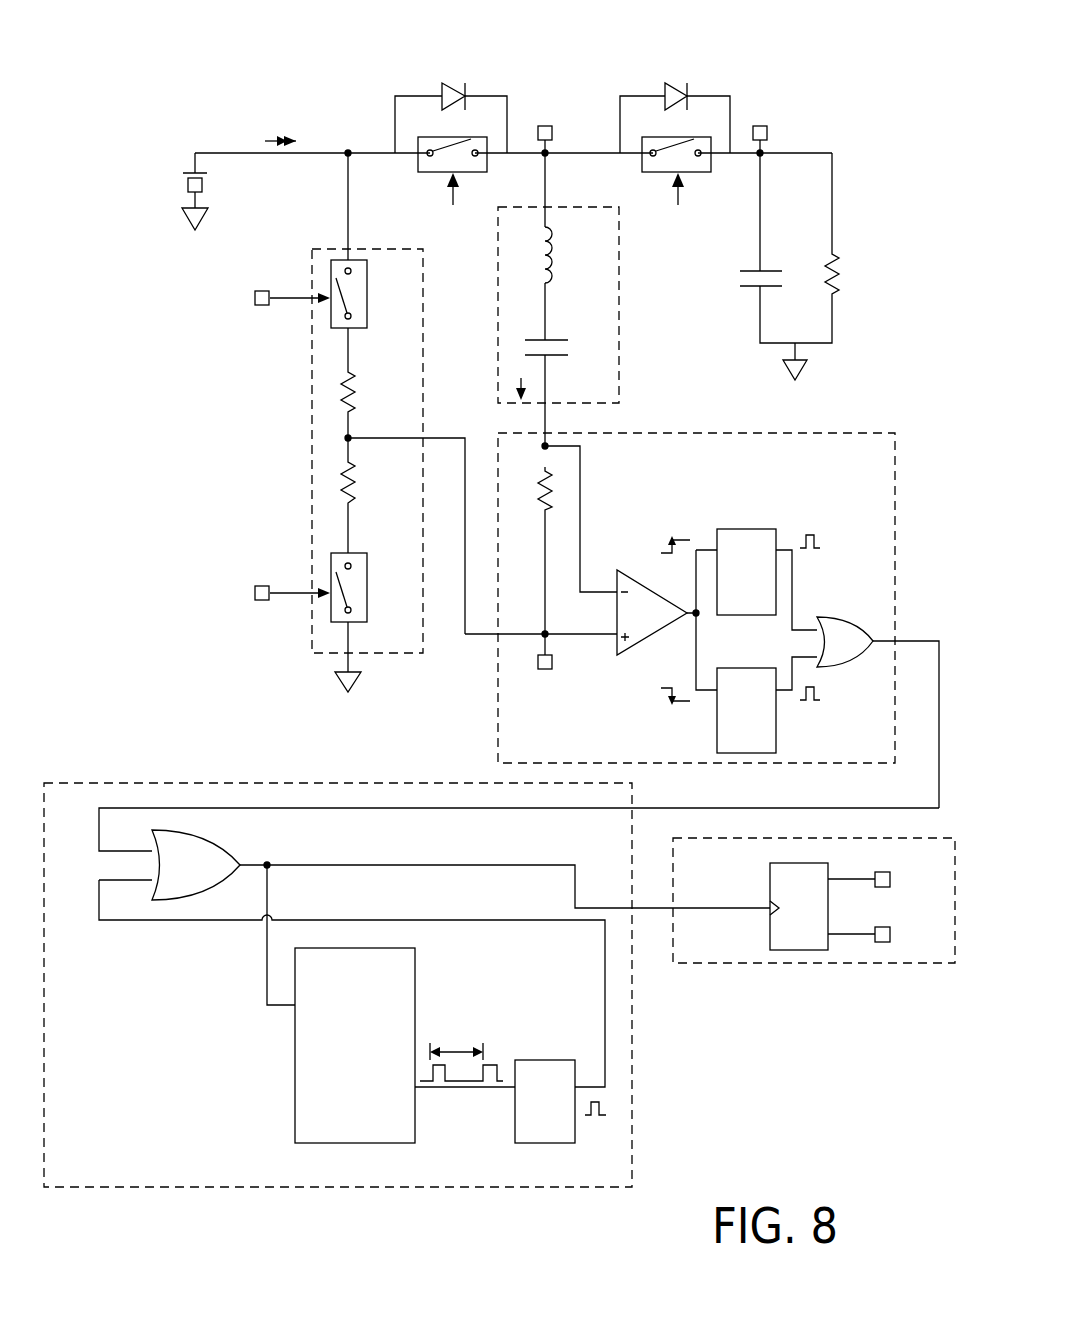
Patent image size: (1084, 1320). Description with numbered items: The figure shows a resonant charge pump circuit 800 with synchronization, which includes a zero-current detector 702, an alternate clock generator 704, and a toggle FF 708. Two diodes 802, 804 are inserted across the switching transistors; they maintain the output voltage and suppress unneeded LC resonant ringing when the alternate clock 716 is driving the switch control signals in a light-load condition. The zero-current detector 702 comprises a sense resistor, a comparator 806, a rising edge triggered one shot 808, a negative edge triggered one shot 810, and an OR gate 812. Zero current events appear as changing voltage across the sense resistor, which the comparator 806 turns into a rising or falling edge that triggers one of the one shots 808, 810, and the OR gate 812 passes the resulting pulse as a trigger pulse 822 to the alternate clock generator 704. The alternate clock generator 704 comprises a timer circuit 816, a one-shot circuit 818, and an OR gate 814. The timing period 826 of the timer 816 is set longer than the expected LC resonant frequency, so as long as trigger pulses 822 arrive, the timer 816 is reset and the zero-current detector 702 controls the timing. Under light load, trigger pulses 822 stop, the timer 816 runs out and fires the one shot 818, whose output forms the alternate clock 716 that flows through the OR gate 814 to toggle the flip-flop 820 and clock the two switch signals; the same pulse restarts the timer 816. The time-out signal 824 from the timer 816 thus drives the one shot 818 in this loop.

The resonant charge pump circuit 800 is at (873, 40).
The diode 802 is at (450, 83).
The diode 804 is at (672, 83).
The comparator 806 is at (628, 656).
The rising edge triggered one shot 808 is at (762, 530).
The negative edge triggered one shot 810 is at (716, 727).
The OR gate 812 is at (835, 622).
The OR gate 814 is at (226, 849).
The timer circuit 816 is at (416, 980).
The one-shot circuit 818 is at (540, 1060).
The flip-flop 820 is at (770, 868).
The trigger pulse 822 is at (912, 641).
The timer time-out signal 824 is at (447, 1092).
The timing period 826 is at (455, 1043).
The zero-current detector 702 is at (828, 433).
The alternate clock generator 704 is at (143, 1190).
The toggle FF 708 is at (745, 963).
The alternate clock 716 is at (175, 920).